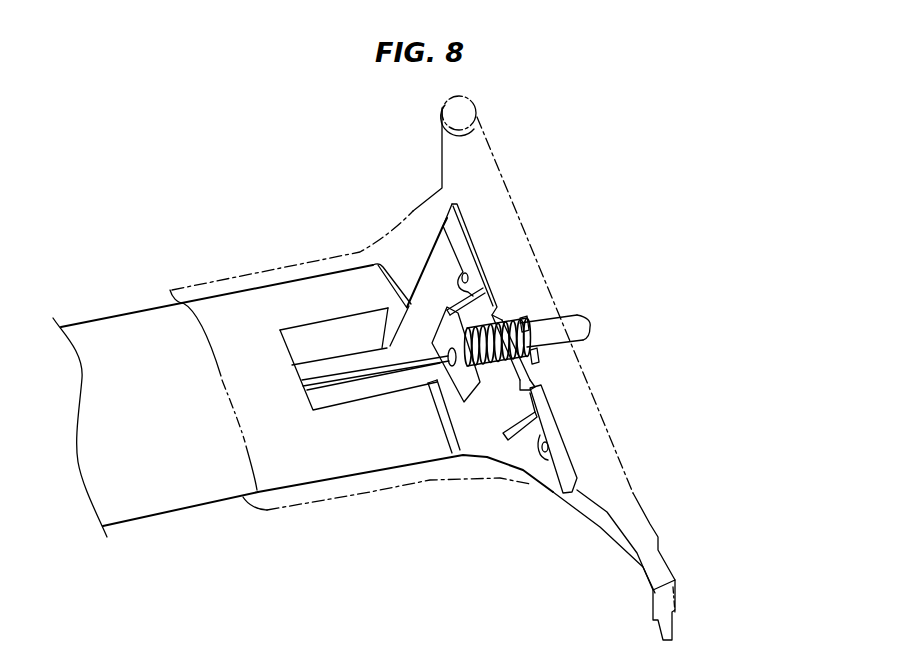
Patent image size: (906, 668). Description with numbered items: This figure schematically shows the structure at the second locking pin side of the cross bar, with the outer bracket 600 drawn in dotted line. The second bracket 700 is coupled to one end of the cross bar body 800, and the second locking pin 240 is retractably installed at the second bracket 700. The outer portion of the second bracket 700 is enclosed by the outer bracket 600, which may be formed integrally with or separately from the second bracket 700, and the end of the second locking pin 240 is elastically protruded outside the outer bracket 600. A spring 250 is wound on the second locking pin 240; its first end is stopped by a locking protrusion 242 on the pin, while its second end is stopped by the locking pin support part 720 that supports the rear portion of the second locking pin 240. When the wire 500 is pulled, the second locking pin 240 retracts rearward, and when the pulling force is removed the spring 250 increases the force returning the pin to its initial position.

The second locking pin 240 is at (587, 320).
The locking protrusion 242 is at (583, 345).
The spring 250 is at (497, 327).
The wire 500 is at (352, 377).
The outer bracket 600 is at (630, 495).
The second bracket 700 is at (512, 457).
The locking pin support part 720 is at (460, 383).
The cross bar body 800 is at (175, 473).